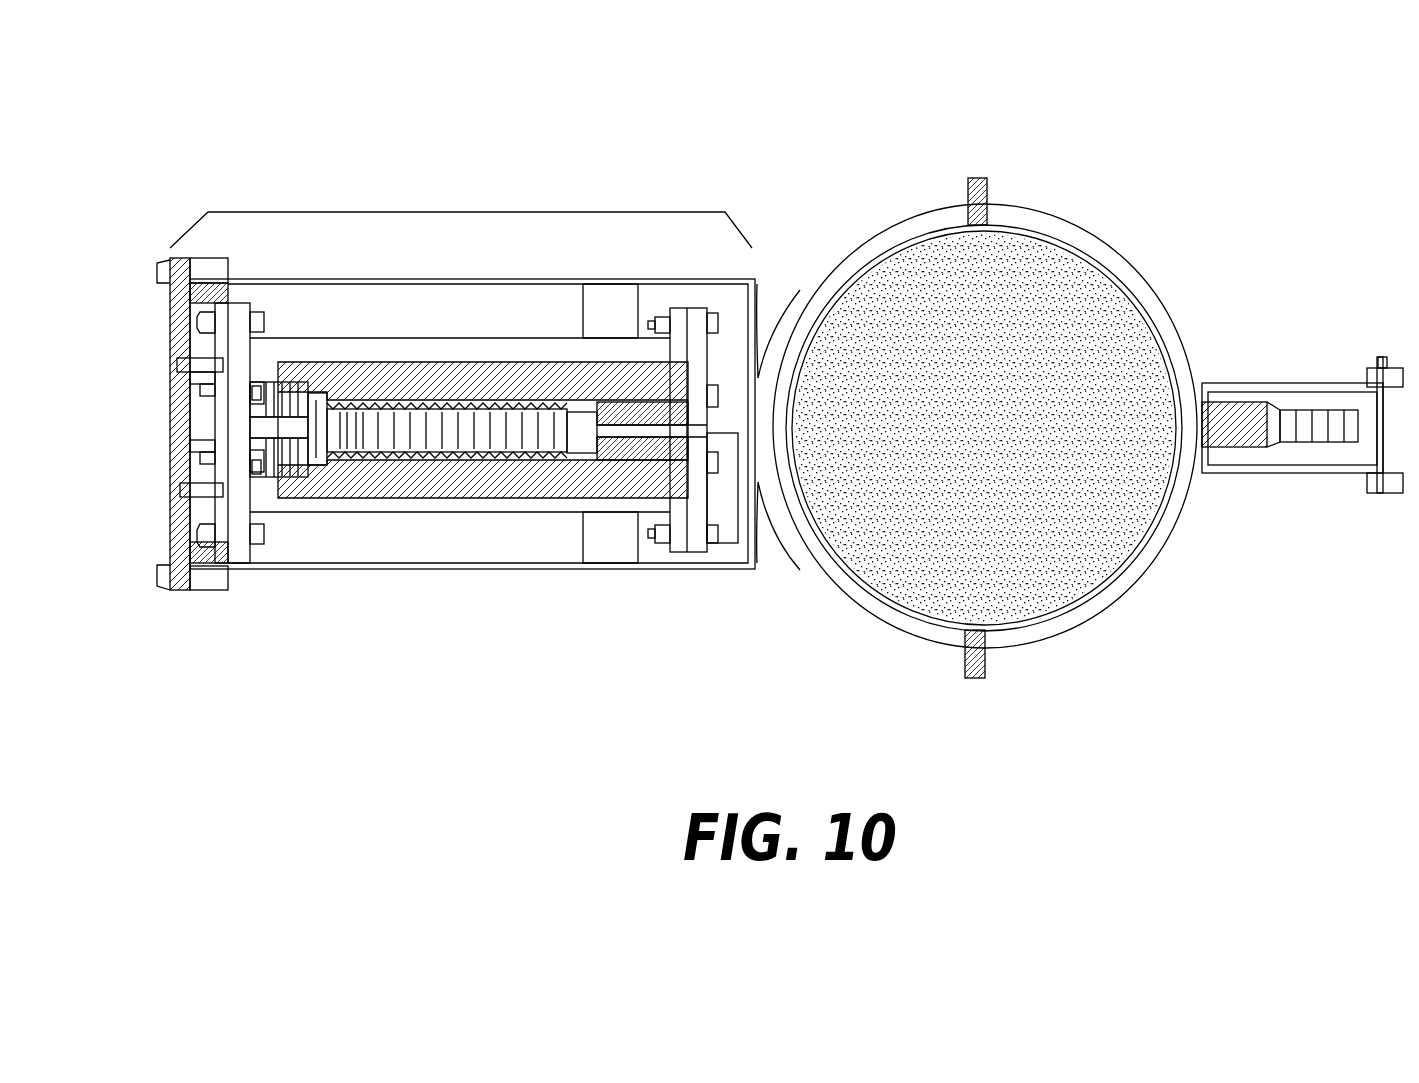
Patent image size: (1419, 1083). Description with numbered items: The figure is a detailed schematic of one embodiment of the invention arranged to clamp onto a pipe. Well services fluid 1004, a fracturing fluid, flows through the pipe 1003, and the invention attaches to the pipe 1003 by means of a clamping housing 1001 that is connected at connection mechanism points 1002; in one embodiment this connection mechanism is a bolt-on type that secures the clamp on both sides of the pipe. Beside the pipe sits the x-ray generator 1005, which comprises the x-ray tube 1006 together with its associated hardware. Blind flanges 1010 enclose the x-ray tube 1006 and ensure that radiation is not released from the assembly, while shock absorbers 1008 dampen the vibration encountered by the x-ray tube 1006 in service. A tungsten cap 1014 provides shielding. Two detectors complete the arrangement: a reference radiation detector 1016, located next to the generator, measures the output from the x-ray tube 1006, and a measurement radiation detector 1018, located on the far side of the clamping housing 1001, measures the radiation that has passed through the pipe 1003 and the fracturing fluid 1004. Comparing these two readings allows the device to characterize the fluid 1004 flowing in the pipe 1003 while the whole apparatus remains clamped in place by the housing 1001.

The clamping housing 1001 is at (1105, 240).
The connection mechanism points 1002 is at (985, 188).
The pipe 1003 is at (1113, 567).
The well services fluid 1004 is at (922, 385).
The x-ray generator 1005 is at (412, 212).
The x-ray tube 1006 is at (478, 480).
The shock absorbers 1008 is at (608, 292).
The blind flanges 1010 is at (242, 557).
The tungsten cap 1014 is at (573, 405).
The reference radiation detector 1016 is at (733, 556).
The measurement radiation detector 1018 is at (1290, 405).